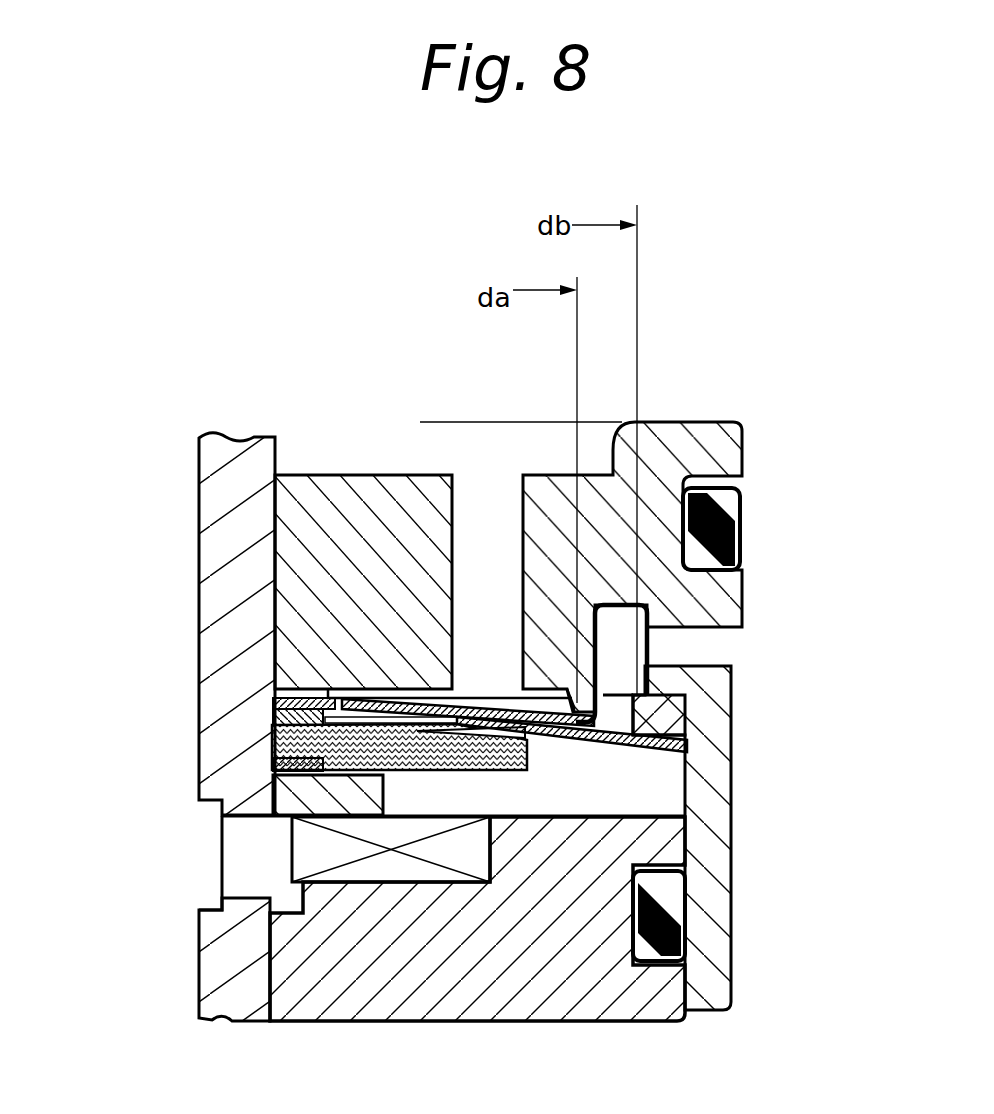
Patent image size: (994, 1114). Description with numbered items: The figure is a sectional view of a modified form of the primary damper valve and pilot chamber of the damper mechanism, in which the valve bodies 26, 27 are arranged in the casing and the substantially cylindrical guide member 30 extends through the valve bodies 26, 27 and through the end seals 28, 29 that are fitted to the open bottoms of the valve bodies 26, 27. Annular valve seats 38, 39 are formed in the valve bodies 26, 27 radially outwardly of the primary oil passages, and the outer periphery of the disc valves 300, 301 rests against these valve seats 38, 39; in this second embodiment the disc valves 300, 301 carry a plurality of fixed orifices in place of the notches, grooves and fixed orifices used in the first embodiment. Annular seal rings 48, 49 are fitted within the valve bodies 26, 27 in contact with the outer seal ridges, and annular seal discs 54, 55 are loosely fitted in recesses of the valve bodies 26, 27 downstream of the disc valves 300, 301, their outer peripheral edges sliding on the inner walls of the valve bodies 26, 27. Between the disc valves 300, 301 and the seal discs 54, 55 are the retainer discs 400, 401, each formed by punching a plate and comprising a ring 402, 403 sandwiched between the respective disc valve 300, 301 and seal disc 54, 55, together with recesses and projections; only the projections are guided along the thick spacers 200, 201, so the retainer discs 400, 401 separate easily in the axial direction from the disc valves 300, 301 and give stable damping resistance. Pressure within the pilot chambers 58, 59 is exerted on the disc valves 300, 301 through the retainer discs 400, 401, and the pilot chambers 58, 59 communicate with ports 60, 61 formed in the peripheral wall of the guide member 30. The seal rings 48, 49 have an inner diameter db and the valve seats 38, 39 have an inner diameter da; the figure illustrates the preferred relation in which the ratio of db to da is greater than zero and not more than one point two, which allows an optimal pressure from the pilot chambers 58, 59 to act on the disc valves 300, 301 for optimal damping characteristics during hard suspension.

The valve body 26 is at (690, 567).
The valve body 27 is at (663, 462).
The valve seat 38 is at (719, 663).
The valve seat 39 is at (600, 660).
The seal ring 48 is at (731, 728).
The seal ring 49 is at (670, 718).
The seal disc 54 is at (638, 780).
The seal disc 55 is at (528, 742).
The ring 402 is at (676, 824).
The ring 403 is at (617, 750).
The pilot chamber 58 is at (644, 879).
The pilot chamber 59 is at (557, 788).
The end seal 28 is at (477, 955).
The end seal 29 is at (412, 972).
The guide member 30 is at (229, 993).
The port 60 is at (165, 863).
The port 61 is at (233, 897).
The spacer 200 is at (286, 740).
The spacer 201 is at (272, 722).
The disc valve 300 is at (378, 550).
The disc valve 301 is at (407, 690).
The retainer disc 400 is at (468, 546).
The retainer disc 401 is at (478, 688).